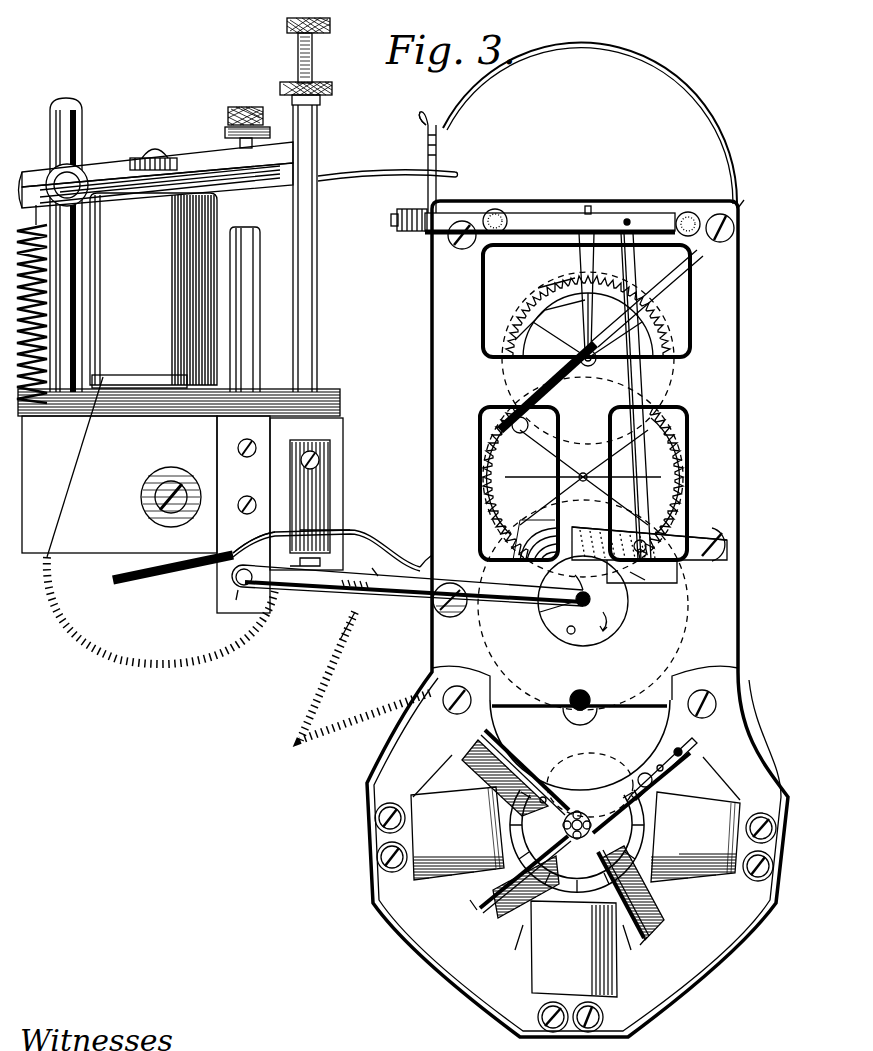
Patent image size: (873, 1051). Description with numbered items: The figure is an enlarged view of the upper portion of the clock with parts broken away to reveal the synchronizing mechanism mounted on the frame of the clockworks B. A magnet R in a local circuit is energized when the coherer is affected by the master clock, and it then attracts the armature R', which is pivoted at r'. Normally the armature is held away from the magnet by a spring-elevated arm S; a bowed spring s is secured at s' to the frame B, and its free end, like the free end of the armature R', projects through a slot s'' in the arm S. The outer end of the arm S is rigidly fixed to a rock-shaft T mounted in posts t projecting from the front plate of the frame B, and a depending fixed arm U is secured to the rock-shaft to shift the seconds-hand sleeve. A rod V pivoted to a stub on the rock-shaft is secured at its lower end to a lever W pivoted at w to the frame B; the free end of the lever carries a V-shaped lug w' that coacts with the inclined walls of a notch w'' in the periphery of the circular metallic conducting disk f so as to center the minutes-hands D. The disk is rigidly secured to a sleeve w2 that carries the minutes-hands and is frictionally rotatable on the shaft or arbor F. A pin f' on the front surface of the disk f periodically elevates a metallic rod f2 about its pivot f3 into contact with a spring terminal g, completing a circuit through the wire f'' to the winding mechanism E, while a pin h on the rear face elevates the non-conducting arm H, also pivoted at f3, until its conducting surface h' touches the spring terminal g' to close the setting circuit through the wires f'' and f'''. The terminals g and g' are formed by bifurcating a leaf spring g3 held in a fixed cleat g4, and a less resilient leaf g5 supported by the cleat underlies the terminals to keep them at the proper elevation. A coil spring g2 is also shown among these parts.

The bowed spring s is at (590, 123).
The securing point of spring s' is at (752, 194).
The frame of the clockworks B is at (685, 460).
The rock-shaft T is at (560, 218).
The posts t is at (495, 209).
The spring-elevated arm S is at (438, 152).
The slot in arm S s'' is at (412, 136).
The depending fixed arm U is at (587, 321).
The rod V is at (628, 392).
The minutes-hands D is at (660, 292).
The lever W is at (670, 572).
The pivot of lever W w is at (649, 518).
The V-shaped lug w' is at (629, 540).
The sleeve w2 is at (642, 581).
The V-shaped notch w'' is at (650, 586).
The shaft or arbor F is at (583, 603).
The circular metallic conducting disk f is at (543, 622).
The pin f' is at (547, 640).
The pin h is at (587, 573).
The metallic conducting surface h' is at (364, 559).
The arm H is at (407, 589).
The spring terminal g is at (326, 542).
The spring terminal g' is at (437, 550).
The leaf spring g3 is at (285, 530).
The fixed cleat g4 is at (330, 495).
The less resilient leaf g5 is at (345, 532).
The coil spring g2 is at (355, 681).
The wire f'' is at (173, 586).
The pivot f3 is at (238, 604).
The wire f''' is at (161, 610).
The metallic rod f2 is at (398, 604).
The magnet R is at (153, 290).
The knob r' is at (73, 171).
The armature R' is at (156, 164).
The winding mechanism E is at (575, 834).